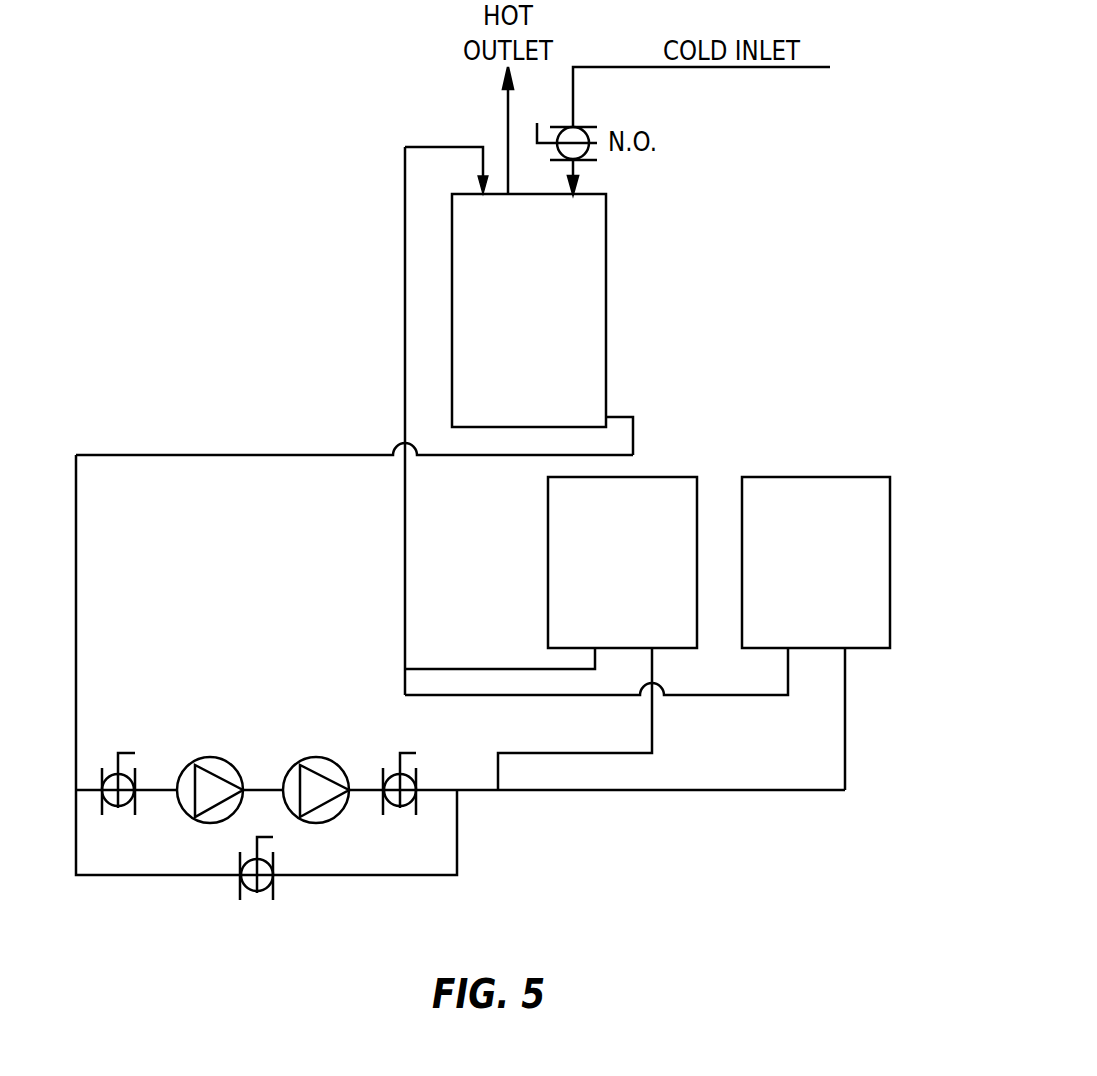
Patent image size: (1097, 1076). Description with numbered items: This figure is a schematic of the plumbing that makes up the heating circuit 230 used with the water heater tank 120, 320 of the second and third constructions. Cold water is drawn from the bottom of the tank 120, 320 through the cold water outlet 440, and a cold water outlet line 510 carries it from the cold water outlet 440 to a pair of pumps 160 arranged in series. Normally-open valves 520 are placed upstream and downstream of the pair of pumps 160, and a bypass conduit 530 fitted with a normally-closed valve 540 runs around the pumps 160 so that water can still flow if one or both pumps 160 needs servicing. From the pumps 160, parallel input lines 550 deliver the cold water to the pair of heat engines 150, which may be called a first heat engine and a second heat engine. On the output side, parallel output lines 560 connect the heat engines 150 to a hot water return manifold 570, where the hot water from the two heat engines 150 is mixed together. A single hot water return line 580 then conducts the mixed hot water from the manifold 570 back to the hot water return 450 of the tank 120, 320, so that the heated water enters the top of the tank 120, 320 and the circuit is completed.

The tank 120 is at (593, 308).
The tank 320 is at (577, 238).
The heat engines 150 is at (760, 477).
The pumps 160 is at (292, 768).
The heating circuit 230 is at (320, 540).
The cold water outlet 440 is at (606, 417).
The hot water return 450 is at (483, 170).
The cold water outlet line 510 is at (633, 433).
The normally-open valves 520 is at (137, 767).
The bypass conduit 530 is at (358, 877).
The normally-closed valve 540 is at (237, 888).
The parallel input lines 550 is at (652, 718).
The parallel output lines 560 is at (527, 695).
The hot water return manifold 570 is at (405, 680).
The hot water return line 580 is at (405, 300).